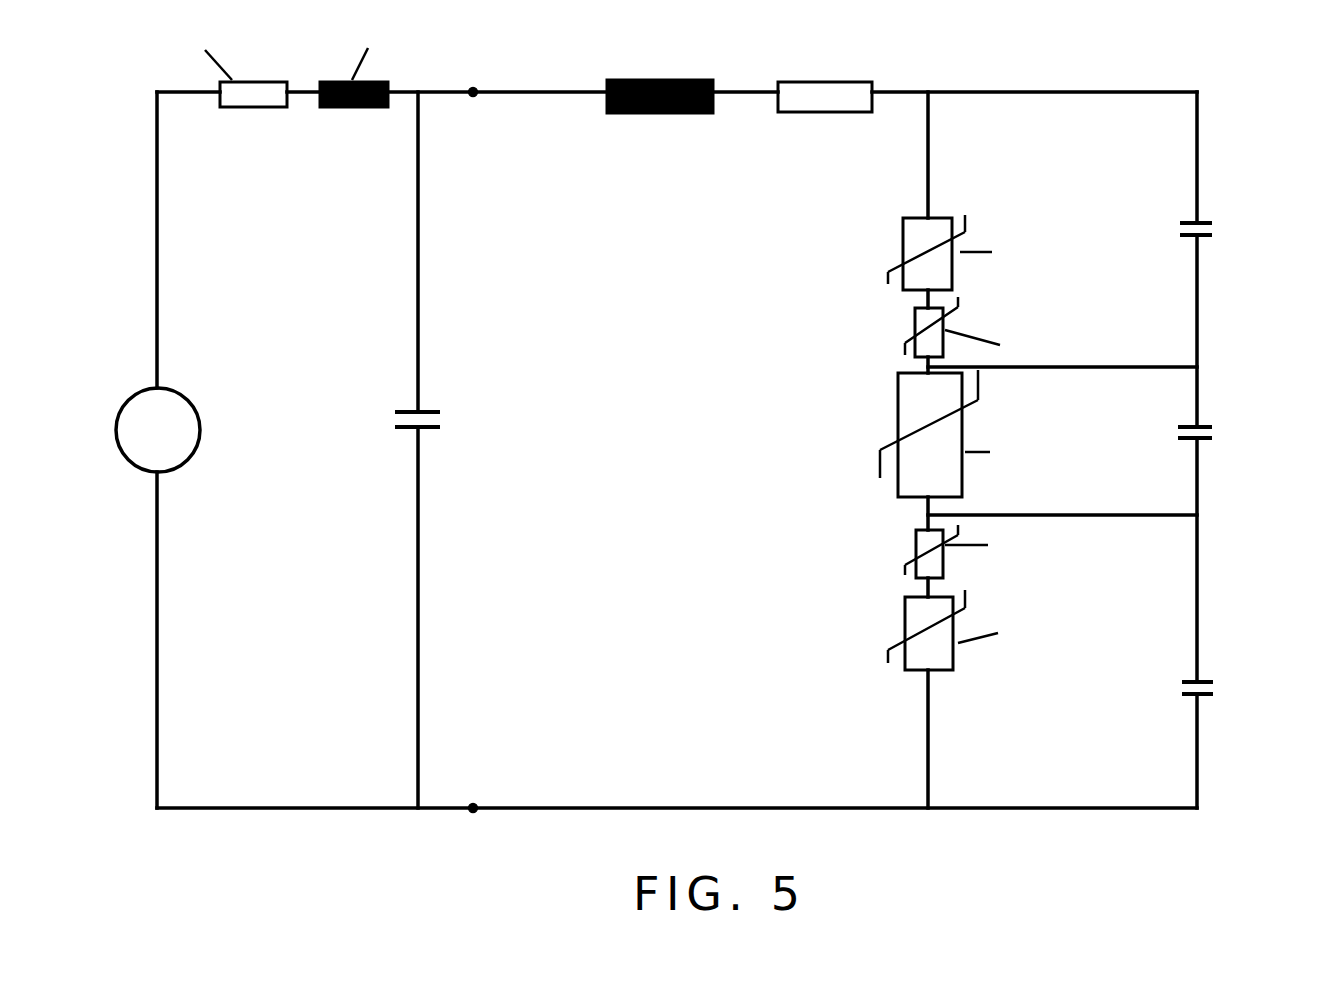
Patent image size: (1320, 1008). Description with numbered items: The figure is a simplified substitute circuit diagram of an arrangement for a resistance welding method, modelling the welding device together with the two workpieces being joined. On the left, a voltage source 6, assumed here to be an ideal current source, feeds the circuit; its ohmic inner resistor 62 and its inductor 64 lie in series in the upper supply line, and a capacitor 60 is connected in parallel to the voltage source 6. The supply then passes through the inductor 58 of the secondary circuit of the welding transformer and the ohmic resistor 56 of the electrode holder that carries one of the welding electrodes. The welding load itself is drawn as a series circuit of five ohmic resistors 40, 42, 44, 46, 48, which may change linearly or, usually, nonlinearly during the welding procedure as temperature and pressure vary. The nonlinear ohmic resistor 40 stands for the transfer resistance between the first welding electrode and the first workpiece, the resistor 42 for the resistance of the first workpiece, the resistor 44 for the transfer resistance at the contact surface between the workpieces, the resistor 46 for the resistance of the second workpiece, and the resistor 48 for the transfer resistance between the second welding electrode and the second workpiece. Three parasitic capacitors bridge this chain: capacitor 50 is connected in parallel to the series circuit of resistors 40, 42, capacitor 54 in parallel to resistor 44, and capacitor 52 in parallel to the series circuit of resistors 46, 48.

The voltage source 6 is at (200, 437).
The nonlinear ohmic resistor 40 is at (903, 240).
The nonlinear ohmic resistor 42 is at (915, 330).
The nonlinear ohmic resistor 44 is at (898, 420).
The nonlinear ohmic resistor 46 is at (916, 545).
The nonlinear ohmic resistor 48 is at (905, 615).
The parasitic capacitor 50 is at (1202, 225).
The parasitic capacitor 52 is at (1203, 685).
The parasitic capacitor 54 is at (1205, 425).
The ohmic resistor of the electrode holder 56 is at (812, 112).
The inductor of the secondary circuit of the welding transformer 58 is at (650, 113).
The capacitor of the voltage source 60 is at (440, 412).
The ohmic inner resistor of the voltage source 62 is at (243, 108).
The inductor of the ideal current source 64 is at (348, 108).